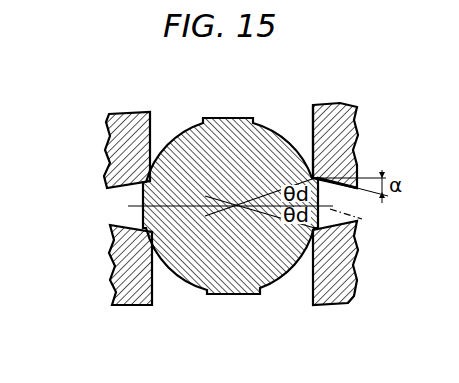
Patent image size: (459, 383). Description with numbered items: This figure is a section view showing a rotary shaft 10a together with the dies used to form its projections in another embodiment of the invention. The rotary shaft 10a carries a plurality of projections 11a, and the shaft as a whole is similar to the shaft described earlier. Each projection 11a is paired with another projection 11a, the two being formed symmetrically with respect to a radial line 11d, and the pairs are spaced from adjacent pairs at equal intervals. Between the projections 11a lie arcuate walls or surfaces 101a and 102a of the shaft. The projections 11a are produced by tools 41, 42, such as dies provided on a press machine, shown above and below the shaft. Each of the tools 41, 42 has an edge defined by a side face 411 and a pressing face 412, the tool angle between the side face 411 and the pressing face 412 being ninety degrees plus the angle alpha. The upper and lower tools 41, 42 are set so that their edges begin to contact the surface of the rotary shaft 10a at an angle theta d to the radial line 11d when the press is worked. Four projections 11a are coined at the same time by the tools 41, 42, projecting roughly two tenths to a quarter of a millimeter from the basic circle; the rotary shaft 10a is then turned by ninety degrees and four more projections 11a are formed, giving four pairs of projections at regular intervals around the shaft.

The rotary shaft 10a is at (272, 114).
The arcuate wall 101a is at (231, 118).
The arcuate wall 102a is at (287, 273).
The projection 11a is at (207, 121).
The upper tool 41 is at (342, 122).
The side face 411 is at (312, 124).
The pressing face 412 is at (334, 188).
The lower tool 42 is at (343, 275).
The radial line 11d is at (358, 217).